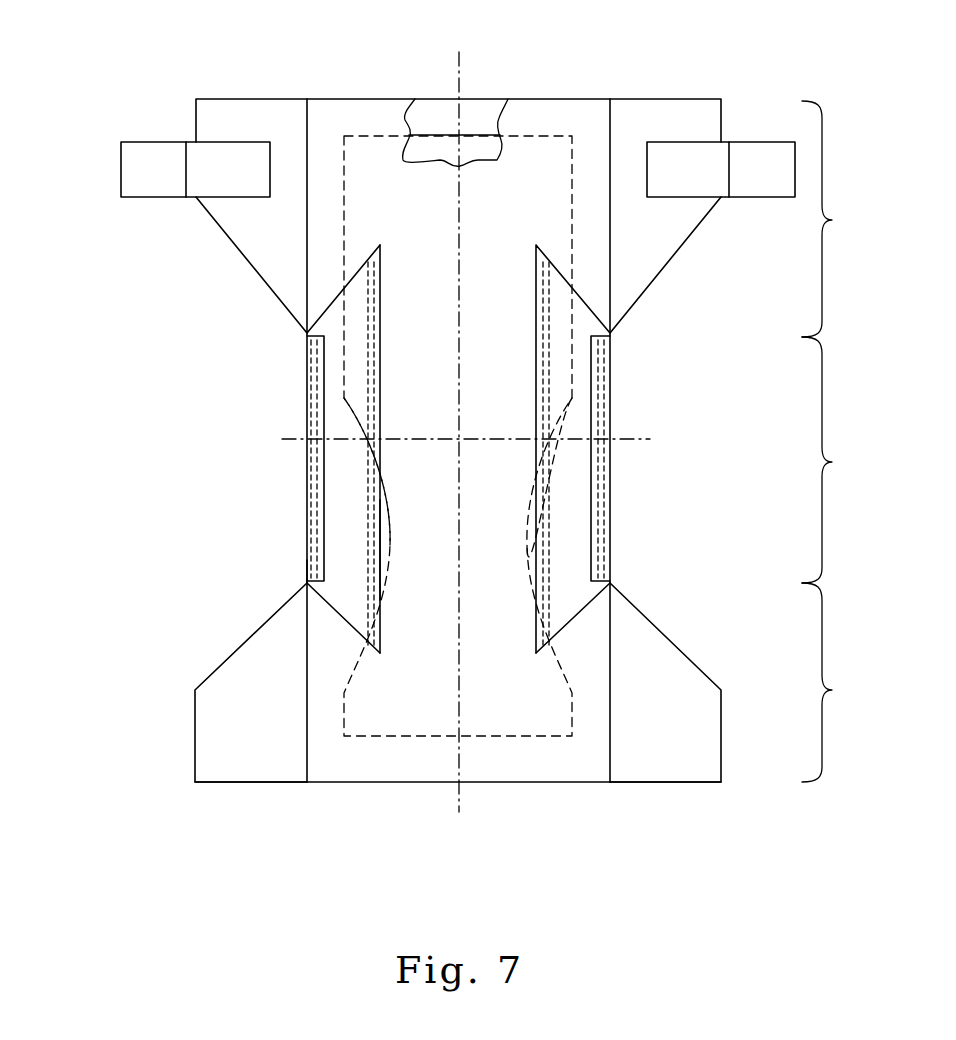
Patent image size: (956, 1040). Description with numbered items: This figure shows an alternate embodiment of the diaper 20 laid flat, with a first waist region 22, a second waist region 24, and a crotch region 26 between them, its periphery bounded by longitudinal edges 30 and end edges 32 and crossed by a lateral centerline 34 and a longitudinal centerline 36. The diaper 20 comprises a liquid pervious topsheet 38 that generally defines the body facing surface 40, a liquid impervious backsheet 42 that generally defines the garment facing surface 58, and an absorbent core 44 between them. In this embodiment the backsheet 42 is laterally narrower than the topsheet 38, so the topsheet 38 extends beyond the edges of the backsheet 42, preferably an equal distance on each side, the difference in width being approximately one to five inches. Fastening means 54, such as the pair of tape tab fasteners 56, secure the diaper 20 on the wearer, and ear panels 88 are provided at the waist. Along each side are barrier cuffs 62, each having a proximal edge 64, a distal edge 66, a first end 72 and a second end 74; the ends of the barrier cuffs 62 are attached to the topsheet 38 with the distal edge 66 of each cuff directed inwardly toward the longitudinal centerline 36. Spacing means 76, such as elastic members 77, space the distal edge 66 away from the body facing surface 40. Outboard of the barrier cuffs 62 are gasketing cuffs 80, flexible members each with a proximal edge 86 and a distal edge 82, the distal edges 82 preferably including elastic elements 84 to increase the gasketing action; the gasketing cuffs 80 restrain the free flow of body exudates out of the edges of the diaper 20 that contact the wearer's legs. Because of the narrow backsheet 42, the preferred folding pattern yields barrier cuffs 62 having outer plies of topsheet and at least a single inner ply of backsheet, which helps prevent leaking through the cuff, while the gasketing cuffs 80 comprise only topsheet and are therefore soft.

The diaper 20 is at (152, 402).
The first waist region 22 is at (834, 682).
The second waist region 24 is at (834, 219).
The crotch region 26 is at (836, 460).
The longitudinal edges 30 is at (305, 569).
The end edges 32 is at (359, 99).
The lateral centerline 34 is at (637, 441).
The longitudinal centerline 36 is at (459, 66).
The topsheet 38 is at (587, 108).
The body facing surface 40 is at (412, 218).
The backsheet 42 is at (477, 114).
The absorbent core 44 is at (441, 148).
The fastening means 54 is at (158, 108).
The tape tab fasteners 56 is at (153, 187).
The garment facing surface 58 is at (322, 300).
The barrier cuffs 62 is at (353, 383).
The proximal edge 64 is at (305, 466).
The distal edge 66 is at (378, 413).
The first end 72 is at (367, 633).
The second end 74 is at (374, 252).
The spacing means 76 is at (335, 541).
The elastic members 77 is at (367, 512).
The gasketing cuffs 80 is at (593, 578).
The distal edge 82 is at (610, 393).
The elastic elements 84 is at (605, 422).
The proximal edge 86 is at (592, 370).
The ear panels 88 is at (245, 783).